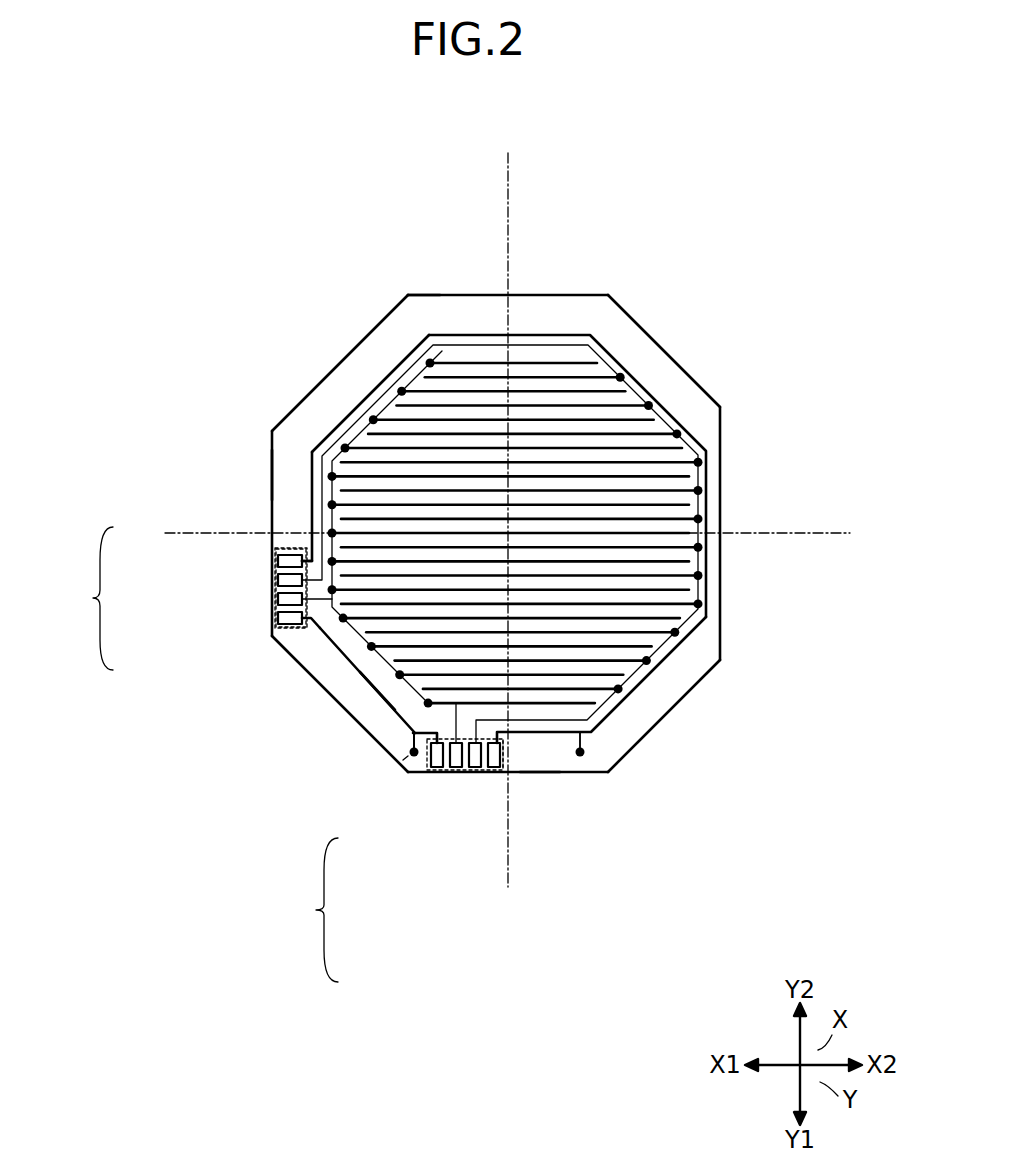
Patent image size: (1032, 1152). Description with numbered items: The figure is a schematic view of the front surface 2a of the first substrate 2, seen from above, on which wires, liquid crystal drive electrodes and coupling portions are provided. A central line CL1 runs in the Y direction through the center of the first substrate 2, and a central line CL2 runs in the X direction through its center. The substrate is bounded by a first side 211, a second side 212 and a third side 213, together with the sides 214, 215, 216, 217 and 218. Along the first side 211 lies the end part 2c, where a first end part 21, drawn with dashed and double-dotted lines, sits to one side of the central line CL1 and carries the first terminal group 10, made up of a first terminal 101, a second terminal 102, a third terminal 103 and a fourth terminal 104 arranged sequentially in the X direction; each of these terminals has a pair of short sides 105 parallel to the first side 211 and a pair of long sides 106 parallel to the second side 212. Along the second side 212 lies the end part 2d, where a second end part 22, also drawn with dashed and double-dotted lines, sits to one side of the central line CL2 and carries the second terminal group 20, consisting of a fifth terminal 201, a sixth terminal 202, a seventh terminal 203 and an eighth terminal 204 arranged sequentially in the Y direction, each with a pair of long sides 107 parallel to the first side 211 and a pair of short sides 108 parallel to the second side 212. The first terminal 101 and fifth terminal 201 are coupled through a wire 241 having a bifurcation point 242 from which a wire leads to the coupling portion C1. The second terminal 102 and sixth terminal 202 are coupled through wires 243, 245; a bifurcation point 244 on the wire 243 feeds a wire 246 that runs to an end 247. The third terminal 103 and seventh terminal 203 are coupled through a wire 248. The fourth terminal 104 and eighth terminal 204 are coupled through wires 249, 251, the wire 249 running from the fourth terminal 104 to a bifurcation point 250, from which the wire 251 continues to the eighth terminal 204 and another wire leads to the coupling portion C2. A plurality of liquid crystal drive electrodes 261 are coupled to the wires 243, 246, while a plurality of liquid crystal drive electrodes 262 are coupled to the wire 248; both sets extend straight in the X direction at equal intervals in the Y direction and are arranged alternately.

The first substrate 2 is at (643, 199).
The front surface 2a is at (427, 305).
The end part 2c is at (530, 757).
The end part 2d is at (276, 470).
The first terminal group 10 is at (307, 910).
The first terminal 101 is at (435, 770).
The second terminal 102 is at (452, 770).
The third terminal 103 is at (470, 770).
The fourth terminal 104 is at (485, 770).
The short sides 105 is at (495, 773).
The long sides 106 is at (501, 762).
The long sides 107 is at (278, 562).
The short sides 108 is at (278, 560).
The second terminal group 20 is at (81, 598).
The fifth terminal 201 is at (278, 618).
The sixth terminal 202 is at (278, 599).
The seventh terminal 203 is at (278, 580).
The eighth terminal 204 is at (278, 559).
The first end part 21 is at (403, 760).
The second end part 22 is at (295, 548).
The first side 211 is at (573, 773).
The second side 212 is at (270, 516).
The third side 213 is at (360, 725).
The upper-left oblique side 214 is at (305, 398).
The top side 215 is at (478, 295).
The upper-right oblique side 216 is at (688, 372).
The right side 217 is at (722, 462).
The lower-right oblique side 218 is at (722, 665).
The wire 241 is at (376, 698).
The bifurcation point 242 is at (407, 740).
The wire 243 is at (393, 672).
The bifurcation point 244 is at (303, 663).
The wire 245 is at (305, 630).
The wire 246 is at (278, 473).
The end 247 is at (433, 338).
The wire 248 is at (562, 343).
The wire 249 is at (545, 735).
The bifurcation point 250 is at (587, 753).
The wire 251 is at (677, 414).
The liquid crystal drive electrodes 261 is at (598, 448).
The liquid crystal drive electrodes 262 is at (688, 612).
The coupling portion C1 is at (408, 757).
The coupling portion C2 is at (583, 758).
The central line CL1 is at (511, 183).
The central line CL2 is at (843, 535).